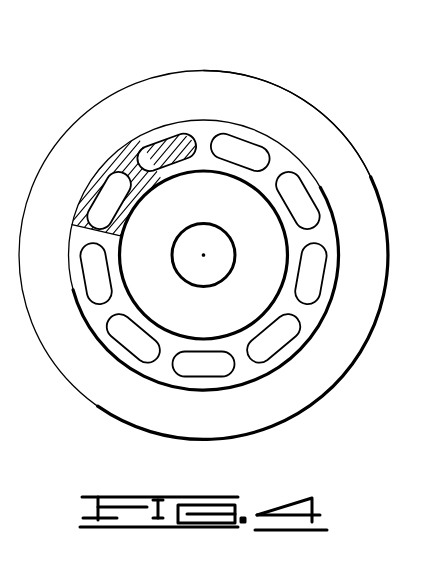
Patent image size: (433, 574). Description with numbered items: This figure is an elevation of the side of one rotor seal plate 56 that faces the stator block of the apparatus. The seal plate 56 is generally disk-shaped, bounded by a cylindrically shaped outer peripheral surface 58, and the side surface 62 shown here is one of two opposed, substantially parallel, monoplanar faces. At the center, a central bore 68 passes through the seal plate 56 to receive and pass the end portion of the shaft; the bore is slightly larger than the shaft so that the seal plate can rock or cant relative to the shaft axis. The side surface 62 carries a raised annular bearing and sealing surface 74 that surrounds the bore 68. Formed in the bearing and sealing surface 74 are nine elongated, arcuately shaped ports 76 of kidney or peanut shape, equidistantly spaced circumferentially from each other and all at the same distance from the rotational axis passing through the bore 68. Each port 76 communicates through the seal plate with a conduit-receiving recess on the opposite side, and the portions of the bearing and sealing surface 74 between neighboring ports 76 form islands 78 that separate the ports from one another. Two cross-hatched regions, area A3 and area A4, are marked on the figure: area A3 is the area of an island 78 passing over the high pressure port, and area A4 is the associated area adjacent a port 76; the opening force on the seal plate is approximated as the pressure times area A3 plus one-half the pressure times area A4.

The rotor seal plate 56 is at (137, 80).
The outer peripheral surface 58 is at (386, 214).
The side surface 62 is at (367, 308).
The raised annular bearing and sealing surface 74 is at (160, 368).
The port 76 is at (303, 198).
The island 78 is at (278, 170).
The central bore 68 is at (204, 224).
The island area A3 is at (134, 157).
The port-associated area A4 is at (94, 187).